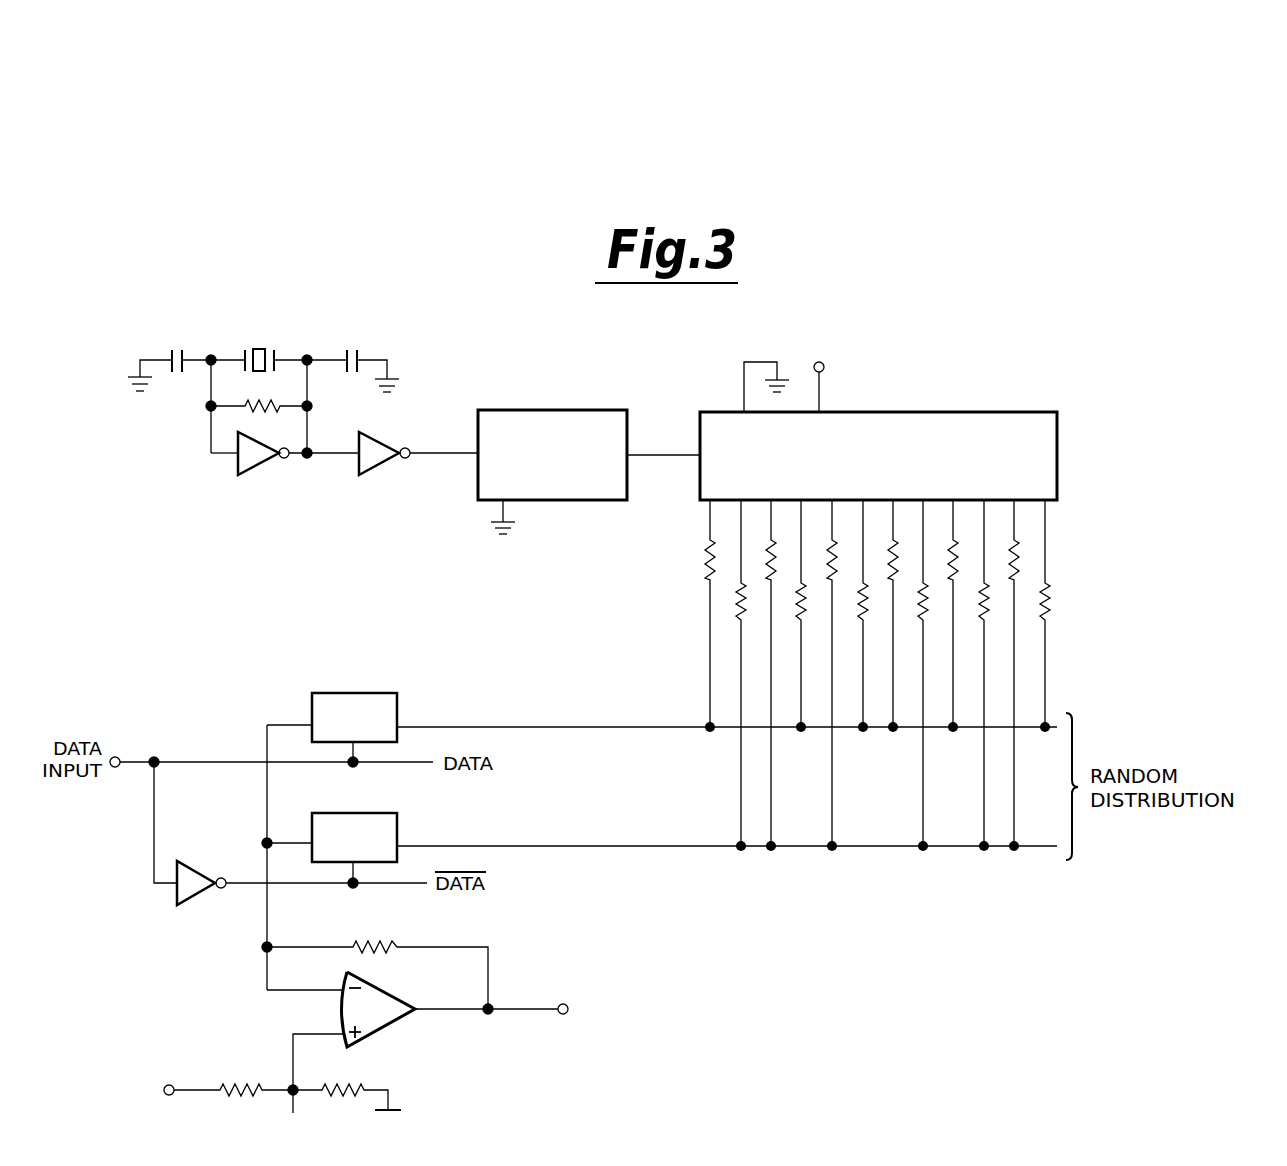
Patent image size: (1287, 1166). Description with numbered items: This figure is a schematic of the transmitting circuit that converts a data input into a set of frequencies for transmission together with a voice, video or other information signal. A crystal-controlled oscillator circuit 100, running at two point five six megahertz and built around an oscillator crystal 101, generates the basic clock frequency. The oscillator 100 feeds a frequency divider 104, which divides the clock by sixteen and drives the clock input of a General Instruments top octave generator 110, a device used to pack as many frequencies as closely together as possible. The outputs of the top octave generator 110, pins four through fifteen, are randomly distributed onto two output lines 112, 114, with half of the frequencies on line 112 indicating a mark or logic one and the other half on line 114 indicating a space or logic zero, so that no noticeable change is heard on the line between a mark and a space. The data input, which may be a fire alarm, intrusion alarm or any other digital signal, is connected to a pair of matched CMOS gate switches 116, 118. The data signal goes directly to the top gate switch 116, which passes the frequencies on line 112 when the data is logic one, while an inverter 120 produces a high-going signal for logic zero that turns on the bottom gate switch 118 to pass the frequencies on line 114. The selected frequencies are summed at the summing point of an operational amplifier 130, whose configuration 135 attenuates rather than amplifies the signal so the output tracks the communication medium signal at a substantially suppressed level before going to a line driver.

The oscillator circuit 100 is at (313, 395).
The oscillator crystal 101 is at (262, 349).
The frequency divider 104 is at (573, 470).
The top octave generator 110 is at (894, 470).
The output line 112 is at (570, 727).
The output line 114 is at (572, 846).
The CMOS gate switch 116 is at (397, 695).
The CMOS gate switch 118 is at (397, 818).
The inverter 120 is at (197, 862).
The operational amplifier 130 is at (385, 997).
The configuration of the operational amplifier 135 is at (510, 977).